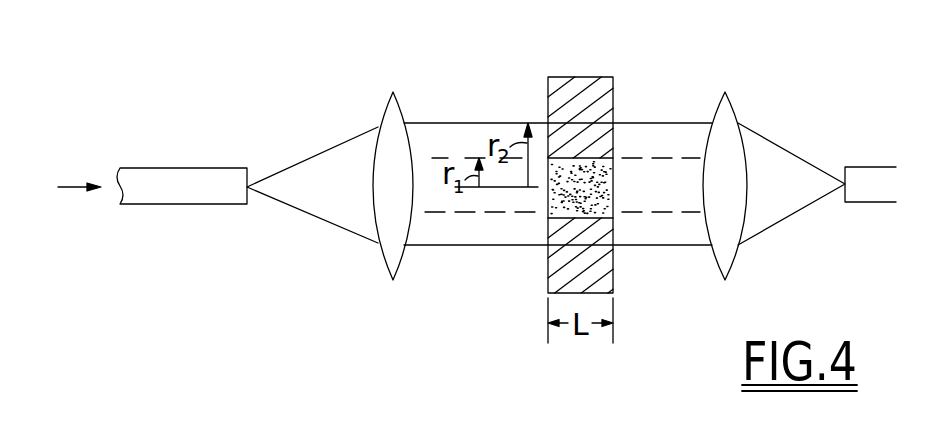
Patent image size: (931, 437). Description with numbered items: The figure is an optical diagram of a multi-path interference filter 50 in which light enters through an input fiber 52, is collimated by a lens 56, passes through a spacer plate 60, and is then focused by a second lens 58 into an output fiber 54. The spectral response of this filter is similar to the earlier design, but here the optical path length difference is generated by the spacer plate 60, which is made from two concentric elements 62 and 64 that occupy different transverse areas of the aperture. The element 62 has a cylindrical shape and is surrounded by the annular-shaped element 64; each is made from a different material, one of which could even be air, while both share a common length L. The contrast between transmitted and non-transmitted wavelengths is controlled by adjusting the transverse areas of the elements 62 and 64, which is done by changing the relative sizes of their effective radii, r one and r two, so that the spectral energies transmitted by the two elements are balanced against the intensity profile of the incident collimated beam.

The filter 50 is at (217, 52).
The input fiber 52 is at (195, 176).
The output fiber 54 is at (885, 187).
The lens 56 is at (389, 258).
The lens 58 is at (738, 257).
The spacer plate 60 is at (580, 172).
The element 62 is at (590, 185).
The element 64 is at (603, 97).